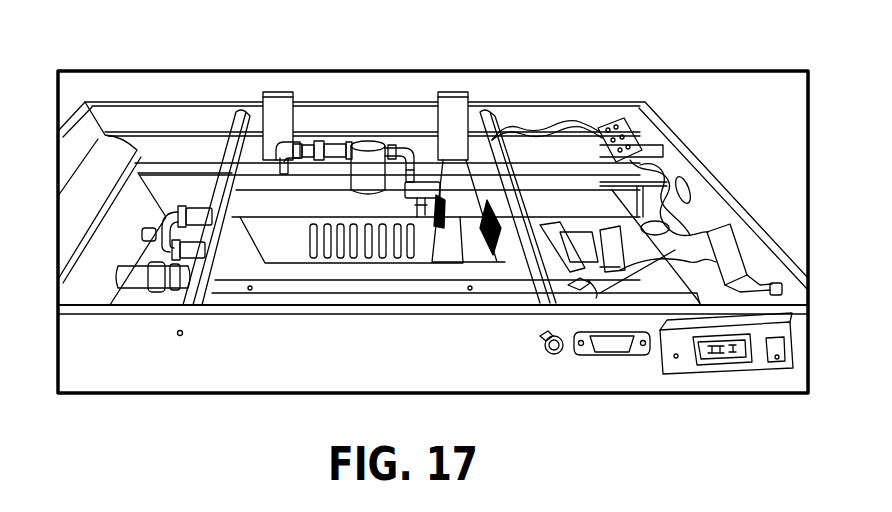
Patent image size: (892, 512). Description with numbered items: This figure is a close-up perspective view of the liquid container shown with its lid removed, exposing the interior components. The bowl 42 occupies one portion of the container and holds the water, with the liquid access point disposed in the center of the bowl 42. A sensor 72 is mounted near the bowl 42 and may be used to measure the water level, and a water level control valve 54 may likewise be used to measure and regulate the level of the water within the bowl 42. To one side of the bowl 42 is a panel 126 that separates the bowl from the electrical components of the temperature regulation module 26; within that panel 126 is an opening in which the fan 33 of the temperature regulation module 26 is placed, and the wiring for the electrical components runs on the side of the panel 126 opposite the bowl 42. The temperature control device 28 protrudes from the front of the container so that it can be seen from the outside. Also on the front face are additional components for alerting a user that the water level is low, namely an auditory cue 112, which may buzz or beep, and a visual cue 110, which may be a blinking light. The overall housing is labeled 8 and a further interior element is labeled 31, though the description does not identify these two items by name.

The chassis / housing 8 is at (178, 363).
The bowl 42 is at (323, 173).
The water level control valve 54 is at (369, 143).
The panel 126 is at (490, 142).
The bracket 31 is at (566, 209).
The temperature regulation module 26 is at (655, 142).
The sensor 72 is at (417, 207).
The fan 33 is at (487, 230).
The auditory cue 112 is at (547, 352).
The visual cue 110 is at (607, 357).
The temperature control device 28 is at (717, 373).